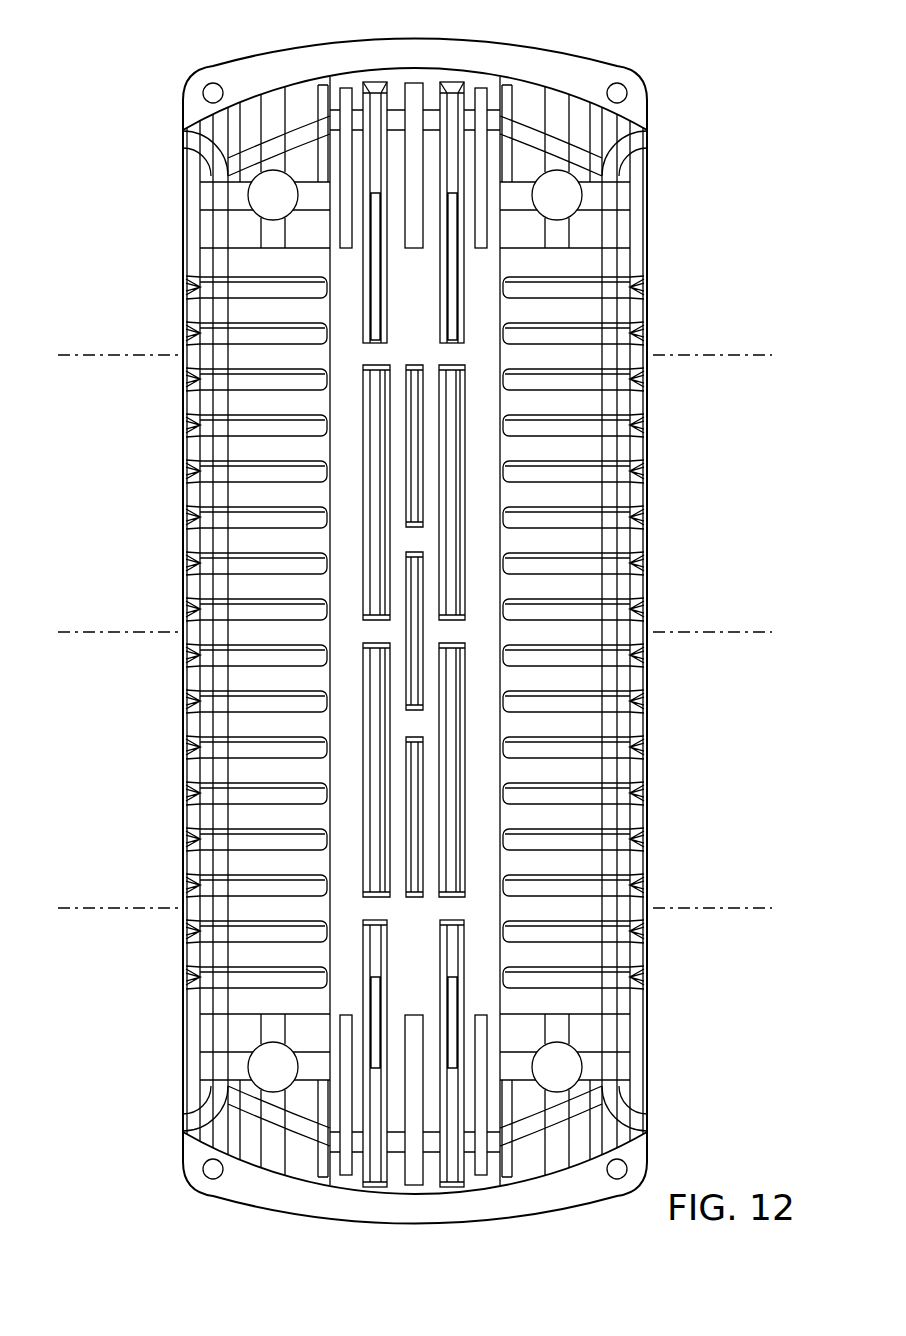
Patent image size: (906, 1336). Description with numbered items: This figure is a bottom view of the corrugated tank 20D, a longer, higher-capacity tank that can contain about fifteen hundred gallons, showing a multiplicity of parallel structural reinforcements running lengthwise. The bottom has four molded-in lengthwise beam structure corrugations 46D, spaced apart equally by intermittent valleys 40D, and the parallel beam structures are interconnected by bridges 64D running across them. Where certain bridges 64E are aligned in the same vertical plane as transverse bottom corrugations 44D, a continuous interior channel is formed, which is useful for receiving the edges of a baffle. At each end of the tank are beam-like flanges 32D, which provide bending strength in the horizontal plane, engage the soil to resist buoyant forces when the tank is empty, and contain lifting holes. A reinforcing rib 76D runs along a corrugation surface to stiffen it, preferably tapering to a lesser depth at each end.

The tank 20D is at (152, 299).
The flanges 32D is at (318, 62).
The reinforcing rib 76D is at (413, 85).
The bridges 64E is at (647, 304).
The transverse bottom corrugations 44D is at (572, 356).
The lengthwise beam structure corrugations 46D is at (398, 408).
The bridges 64D is at (415, 725).
The intermittent valleys 40D is at (463, 972).